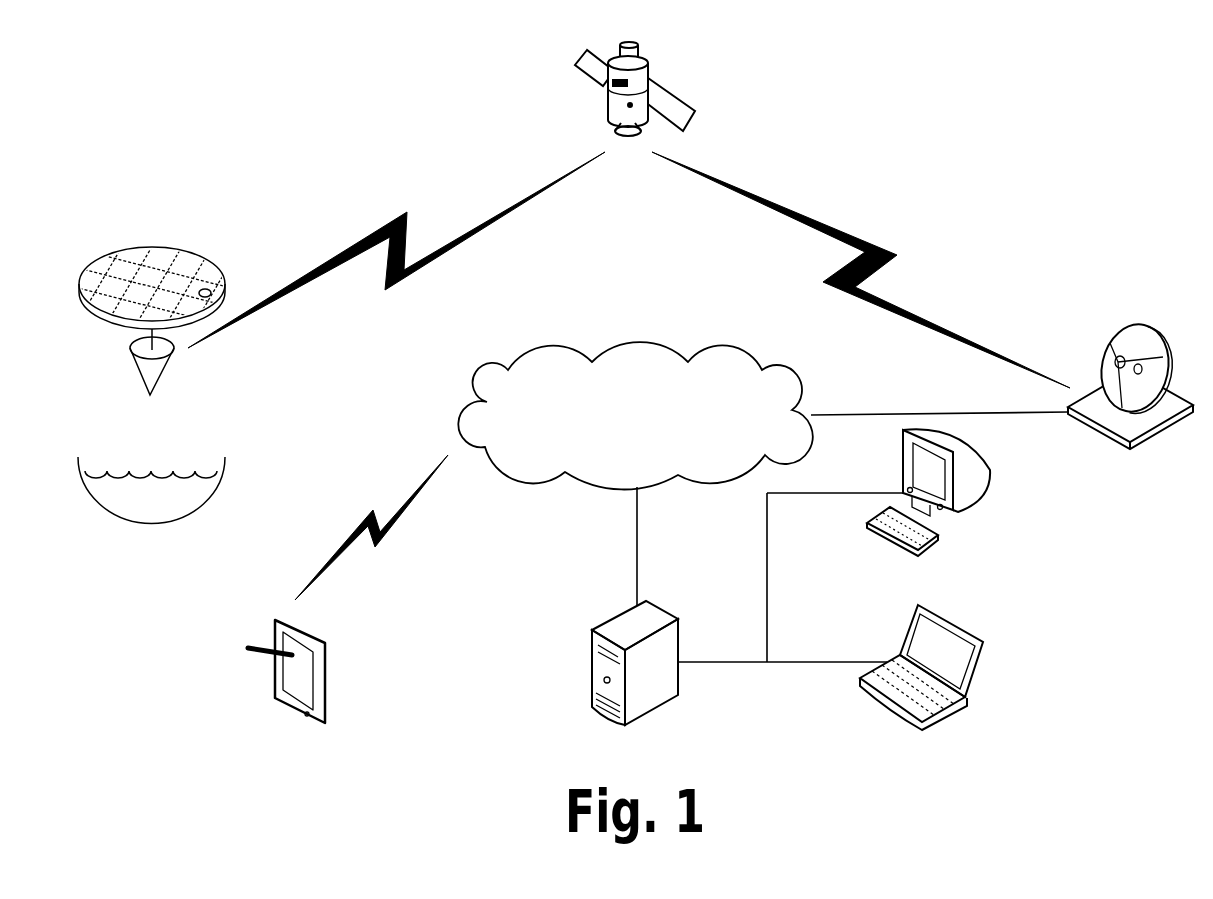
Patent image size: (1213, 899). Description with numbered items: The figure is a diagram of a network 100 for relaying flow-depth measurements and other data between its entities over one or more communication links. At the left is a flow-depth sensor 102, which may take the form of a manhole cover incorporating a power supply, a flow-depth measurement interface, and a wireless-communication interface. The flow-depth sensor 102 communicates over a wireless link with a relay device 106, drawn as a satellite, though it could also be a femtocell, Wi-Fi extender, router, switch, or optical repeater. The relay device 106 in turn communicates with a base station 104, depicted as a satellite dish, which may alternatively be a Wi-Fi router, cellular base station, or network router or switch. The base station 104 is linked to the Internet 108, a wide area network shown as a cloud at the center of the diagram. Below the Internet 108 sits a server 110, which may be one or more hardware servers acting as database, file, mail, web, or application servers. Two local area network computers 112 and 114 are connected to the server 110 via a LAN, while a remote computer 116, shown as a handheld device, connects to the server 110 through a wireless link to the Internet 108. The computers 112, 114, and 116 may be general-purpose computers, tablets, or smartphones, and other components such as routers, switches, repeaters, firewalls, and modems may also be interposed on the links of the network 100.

The network 100 is at (166, 99).
The flow-depth sensor 102 is at (167, 373).
The base station 104 is at (1092, 430).
The relay device 106 is at (692, 122).
The Internet 108 is at (635, 415).
The server 110 is at (592, 667).
The local area network computer 112 is at (982, 667).
The local area network computer 114 is at (982, 508).
The remote computer 116 is at (330, 668).